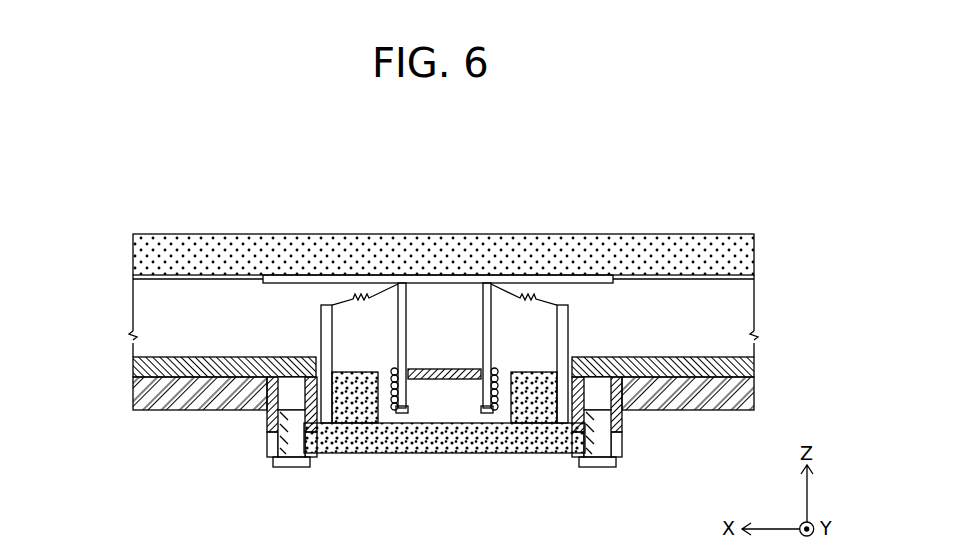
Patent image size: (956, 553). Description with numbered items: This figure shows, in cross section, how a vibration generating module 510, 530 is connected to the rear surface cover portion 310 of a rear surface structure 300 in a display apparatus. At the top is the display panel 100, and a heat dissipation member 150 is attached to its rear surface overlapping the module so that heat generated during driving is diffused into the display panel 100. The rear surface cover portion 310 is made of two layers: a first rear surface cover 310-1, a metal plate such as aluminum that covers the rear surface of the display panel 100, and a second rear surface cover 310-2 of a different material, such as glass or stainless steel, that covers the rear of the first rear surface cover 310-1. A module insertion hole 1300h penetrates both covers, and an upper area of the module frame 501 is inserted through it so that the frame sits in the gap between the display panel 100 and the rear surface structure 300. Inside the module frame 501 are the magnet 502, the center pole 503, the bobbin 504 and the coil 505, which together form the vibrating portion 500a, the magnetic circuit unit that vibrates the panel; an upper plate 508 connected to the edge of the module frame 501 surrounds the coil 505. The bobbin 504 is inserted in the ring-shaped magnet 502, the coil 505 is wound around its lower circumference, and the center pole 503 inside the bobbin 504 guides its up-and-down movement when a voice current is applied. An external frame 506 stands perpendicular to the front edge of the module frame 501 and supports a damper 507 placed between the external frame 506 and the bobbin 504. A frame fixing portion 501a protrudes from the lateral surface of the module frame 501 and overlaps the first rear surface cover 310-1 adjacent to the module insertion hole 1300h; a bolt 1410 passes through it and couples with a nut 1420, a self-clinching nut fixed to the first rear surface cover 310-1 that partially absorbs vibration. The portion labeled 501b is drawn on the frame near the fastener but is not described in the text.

The display panel 100 is at (625, 252).
The heat dissipation member 150 is at (562, 278).
The rear surface structure 300 is at (437, 396).
The rear surface cover portion 310 is at (435, 437).
The first rear surface cover 310-1 is at (242, 385).
The second rear surface cover 310-2 is at (155, 393).
The module insertion hole 1300h is at (320, 400).
The vibrating portion 500a is at (435, 333).
The module frame 501 is at (523, 433).
The frame fixing portion 501a is at (575, 455).
The base plate fixing portion 501b is at (622, 446).
The magnet 502 is at (443, 405).
The center pole 503 is at (468, 383).
The bobbin 504 is at (491, 318).
The coil 505 is at (392, 406).
The external frame 506 is at (320, 306).
The damper 507 is at (361, 297).
The upper plate 508 is at (345, 415).
The vibration generating module 510 is at (577, 336).
The vibration generating module 530 is at (577, 336).
The bolt 1410 is at (600, 467).
The nut 1420 is at (625, 426).